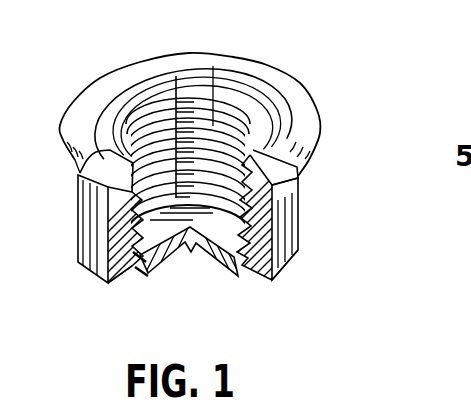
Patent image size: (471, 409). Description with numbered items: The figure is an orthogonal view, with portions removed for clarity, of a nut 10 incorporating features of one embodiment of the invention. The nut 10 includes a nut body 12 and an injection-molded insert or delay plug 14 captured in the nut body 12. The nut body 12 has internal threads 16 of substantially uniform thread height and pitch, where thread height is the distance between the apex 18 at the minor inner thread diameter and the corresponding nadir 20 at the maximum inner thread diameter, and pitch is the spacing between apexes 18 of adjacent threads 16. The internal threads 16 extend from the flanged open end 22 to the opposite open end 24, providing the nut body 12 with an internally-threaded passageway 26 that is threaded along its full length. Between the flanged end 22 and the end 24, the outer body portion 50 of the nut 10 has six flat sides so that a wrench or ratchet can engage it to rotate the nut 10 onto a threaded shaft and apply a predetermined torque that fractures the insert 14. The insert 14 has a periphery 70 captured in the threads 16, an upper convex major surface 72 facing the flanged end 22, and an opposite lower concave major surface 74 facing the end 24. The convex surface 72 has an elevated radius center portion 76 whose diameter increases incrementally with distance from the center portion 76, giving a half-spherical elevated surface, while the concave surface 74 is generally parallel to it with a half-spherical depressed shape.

The nut 10 is at (324, 101).
The nut body 12 is at (315, 220).
The insert or delay plug 14 is at (219, 288).
The internal threads 16 is at (250, 102).
The apex 18 is at (237, 114).
The nadir 20 is at (210, 110).
The flanged open end 22 is at (93, 84).
The opposite open end 24 is at (270, 279).
The internally-threaded passageway 26 is at (170, 98).
The outer body portion 50 is at (70, 186).
The periphery 70 is at (115, 277).
The upper convex major surface 72 is at (296, 173).
The lower concave major surface 74 is at (158, 273).
The center portion 76 is at (191, 255).